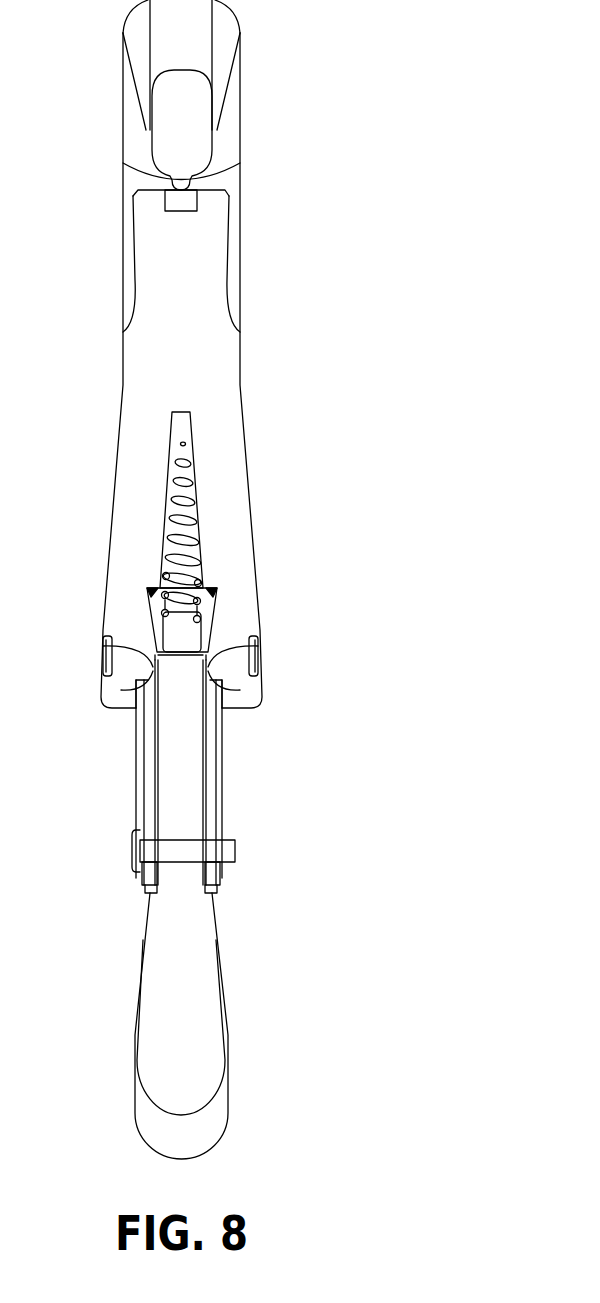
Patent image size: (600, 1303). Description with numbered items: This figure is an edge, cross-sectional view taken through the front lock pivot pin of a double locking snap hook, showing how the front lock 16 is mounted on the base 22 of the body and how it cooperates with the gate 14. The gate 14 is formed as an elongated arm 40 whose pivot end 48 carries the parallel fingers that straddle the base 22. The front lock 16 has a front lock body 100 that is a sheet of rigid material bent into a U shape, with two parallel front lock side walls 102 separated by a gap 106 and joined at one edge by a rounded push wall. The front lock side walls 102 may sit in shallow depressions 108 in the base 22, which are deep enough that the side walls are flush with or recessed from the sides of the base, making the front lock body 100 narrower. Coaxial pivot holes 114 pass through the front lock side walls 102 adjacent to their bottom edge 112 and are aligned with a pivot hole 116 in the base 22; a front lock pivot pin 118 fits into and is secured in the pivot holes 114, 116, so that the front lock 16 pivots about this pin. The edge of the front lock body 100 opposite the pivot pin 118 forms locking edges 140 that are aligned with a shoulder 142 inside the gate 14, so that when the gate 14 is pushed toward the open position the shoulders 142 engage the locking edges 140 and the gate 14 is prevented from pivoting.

The gate 14 is at (240, 362).
The front lock 16 is at (300, 762).
The base 22 is at (228, 1000).
The elongated arm 40 is at (106, 583).
The pivot end 48 is at (122, 712).
The front lock body 100 is at (222, 740).
The front lock side walls 102 is at (138, 828).
The gap 106 is at (155, 762).
The shallow depressions 108 is at (155, 790).
The bottom edge 112 is at (147, 893).
The pivot holes 114 is at (142, 875).
The pivot hole 116 is at (191, 865).
The front lock pivot pin 118 is at (132, 850).
The locking edges 140 is at (121, 690).
The shoulder 142 is at (103, 646).